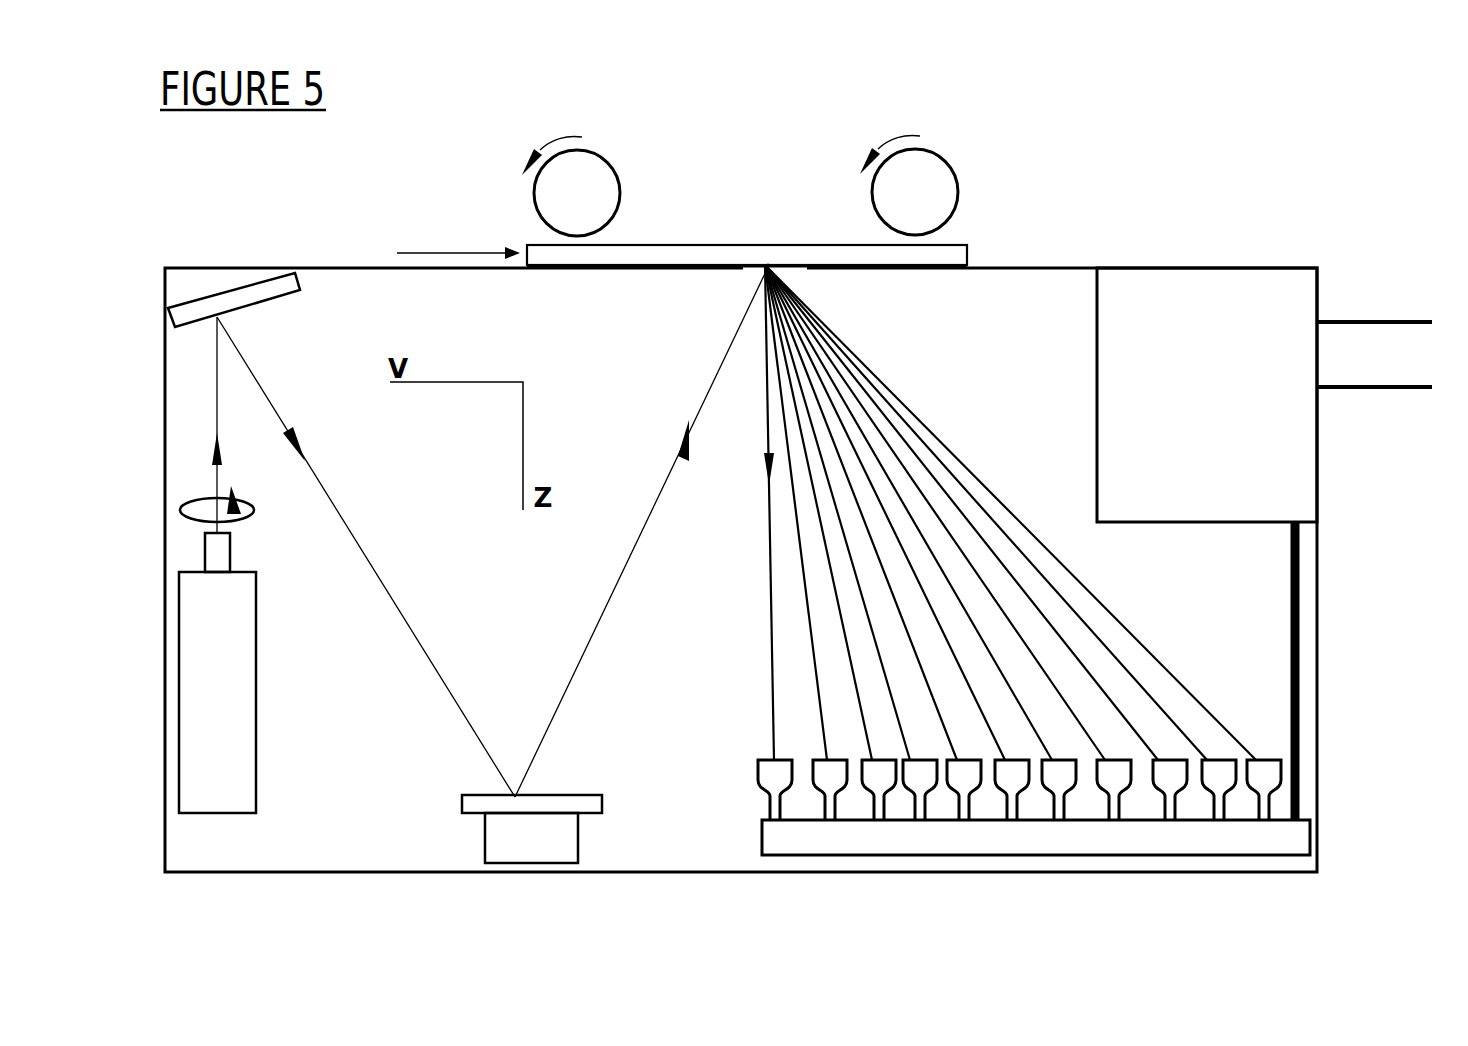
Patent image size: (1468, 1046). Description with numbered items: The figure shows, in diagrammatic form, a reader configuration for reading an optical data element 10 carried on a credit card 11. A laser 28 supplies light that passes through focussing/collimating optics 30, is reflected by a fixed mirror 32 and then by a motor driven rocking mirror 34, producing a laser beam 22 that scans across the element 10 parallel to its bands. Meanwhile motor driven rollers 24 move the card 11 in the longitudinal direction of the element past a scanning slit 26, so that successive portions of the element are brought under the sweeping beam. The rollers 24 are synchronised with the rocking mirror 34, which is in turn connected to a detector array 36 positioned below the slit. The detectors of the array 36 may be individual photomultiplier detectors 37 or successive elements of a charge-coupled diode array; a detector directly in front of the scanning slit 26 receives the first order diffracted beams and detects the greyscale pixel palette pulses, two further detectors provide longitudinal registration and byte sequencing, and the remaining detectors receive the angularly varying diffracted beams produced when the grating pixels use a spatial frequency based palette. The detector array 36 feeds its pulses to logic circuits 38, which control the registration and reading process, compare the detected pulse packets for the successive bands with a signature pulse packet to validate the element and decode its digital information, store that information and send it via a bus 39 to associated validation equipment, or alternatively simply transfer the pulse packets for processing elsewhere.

The optical data element 10 is at (795, 270).
The credit card 11 is at (947, 253).
The laser beam 22 is at (660, 493).
The motor driven rollers 24 is at (583, 175).
The scanning slit 26 is at (743, 270).
The laser 28 is at (232, 706).
The focussing/collimating optics 30 is at (240, 523).
The fixed mirror 32 is at (260, 293).
The motor driven rocking mirror 34 is at (460, 801).
The detector array 36 is at (1300, 778).
The photomultiplier detectors 37 is at (832, 777).
The logic circuits 38 is at (1217, 412).
The bus 39 is at (1386, 375).